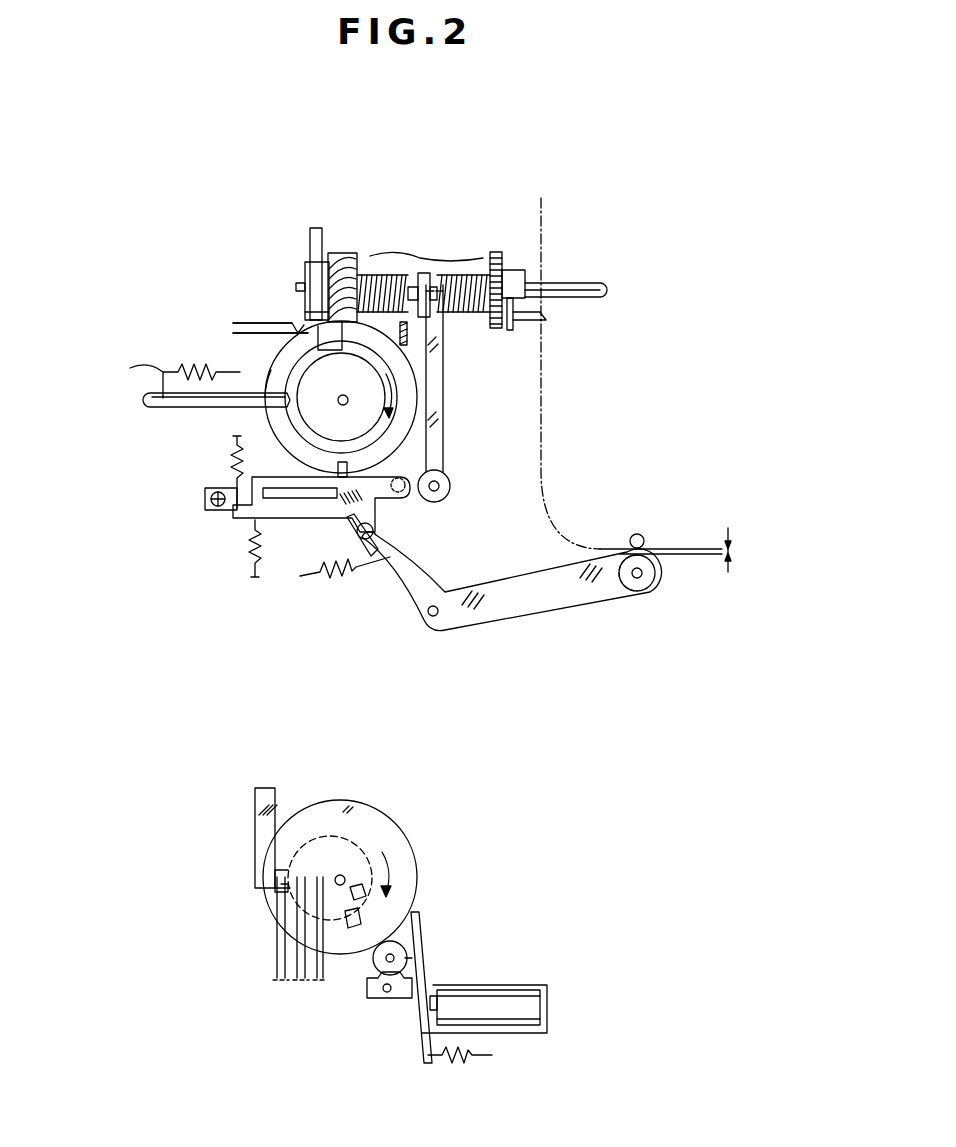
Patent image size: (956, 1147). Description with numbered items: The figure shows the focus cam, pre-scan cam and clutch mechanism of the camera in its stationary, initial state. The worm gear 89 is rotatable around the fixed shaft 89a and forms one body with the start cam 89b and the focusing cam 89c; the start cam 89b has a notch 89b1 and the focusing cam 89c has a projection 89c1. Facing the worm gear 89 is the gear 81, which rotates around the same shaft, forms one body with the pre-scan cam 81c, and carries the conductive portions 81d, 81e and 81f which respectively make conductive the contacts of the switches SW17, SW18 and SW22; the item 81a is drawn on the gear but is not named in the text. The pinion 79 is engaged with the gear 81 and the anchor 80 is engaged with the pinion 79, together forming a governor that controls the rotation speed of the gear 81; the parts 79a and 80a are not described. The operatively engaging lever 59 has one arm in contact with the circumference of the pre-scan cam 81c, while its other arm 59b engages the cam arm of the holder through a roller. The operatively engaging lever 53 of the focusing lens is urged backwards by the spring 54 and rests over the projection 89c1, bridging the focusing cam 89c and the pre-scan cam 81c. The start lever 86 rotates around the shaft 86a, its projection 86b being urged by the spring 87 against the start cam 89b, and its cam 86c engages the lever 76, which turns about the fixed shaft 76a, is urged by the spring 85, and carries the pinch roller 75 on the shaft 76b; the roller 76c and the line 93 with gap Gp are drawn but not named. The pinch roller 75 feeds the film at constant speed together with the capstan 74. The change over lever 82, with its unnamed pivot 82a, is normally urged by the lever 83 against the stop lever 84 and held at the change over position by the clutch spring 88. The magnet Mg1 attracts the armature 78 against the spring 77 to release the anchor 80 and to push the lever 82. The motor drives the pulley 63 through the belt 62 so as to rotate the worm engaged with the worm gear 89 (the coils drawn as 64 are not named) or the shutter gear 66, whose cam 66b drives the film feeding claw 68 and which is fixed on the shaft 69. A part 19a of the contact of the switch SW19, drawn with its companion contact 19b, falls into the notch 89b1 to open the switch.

The belt 62 is at (317, 228).
The pulley 63 is at (344, 254).
The worm 64 is at (428, 258).
The shutter gear 66 is at (496, 252).
The cam 66b is at (514, 272).
The shaft 69 is at (606, 290).
The film feeding claw 68 is at (533, 320).
The paper path center line 93 is at (546, 221).
The gap Gp is at (734, 551).
The capstan 74 is at (636, 533).
The pinch roller 75 is at (640, 592).
The shaft 76b is at (650, 578).
The lever 76 is at (553, 608).
The fixed shaft 76a is at (434, 617).
The lever roller 76c is at (374, 538).
The change over lever 82 is at (444, 394).
The lever pivot 82a is at (451, 487).
The stop lever 84 is at (408, 332).
The worm gear 89 is at (401, 373).
The start cam 89b is at (368, 358).
The focusing cam 89c is at (363, 418).
The fixed shaft 89a is at (342, 397).
The notch 89b1 is at (316, 334).
The projection 89c1 is at (287, 388).
The contact 19a is at (258, 332).
The switch contact 19b is at (238, 322).
The switch SW19 is at (238, 327).
The spring 54 is at (130, 368).
The operatively engaging lever 53 is at (150, 406).
The spring 87 is at (230, 463).
The projection 86b is at (338, 470).
The start lever 86 is at (377, 512).
The shaft 86a is at (406, 494).
The cam 86c is at (350, 533).
The clutch spring 88 is at (207, 502).
The lever 83 is at (246, 546).
The spring 85 is at (344, 572).
The gear 81 is at (399, 848).
The pre-scan cam 81c is at (361, 838).
The cam shaft 81a is at (346, 877).
The conductive portion 81f is at (366, 894).
The conductive portion 81e is at (352, 930).
The conductive portion 81d is at (278, 892).
The operatively engaging lever 59 is at (262, 830).
The arm 59b is at (290, 868).
The switch SW17 is at (280, 986).
The switch SW18 is at (300, 986).
The switch SW22 is at (320, 986).
The armature 78 is at (396, 959).
The anchor 80 is at (372, 999).
The bracket pivot 80a is at (388, 993).
The pinion 79 is at (416, 938).
The lever arm portion 79a is at (406, 958).
The magnet Mg1 is at (532, 1005).
The spring 77 is at (468, 1060).